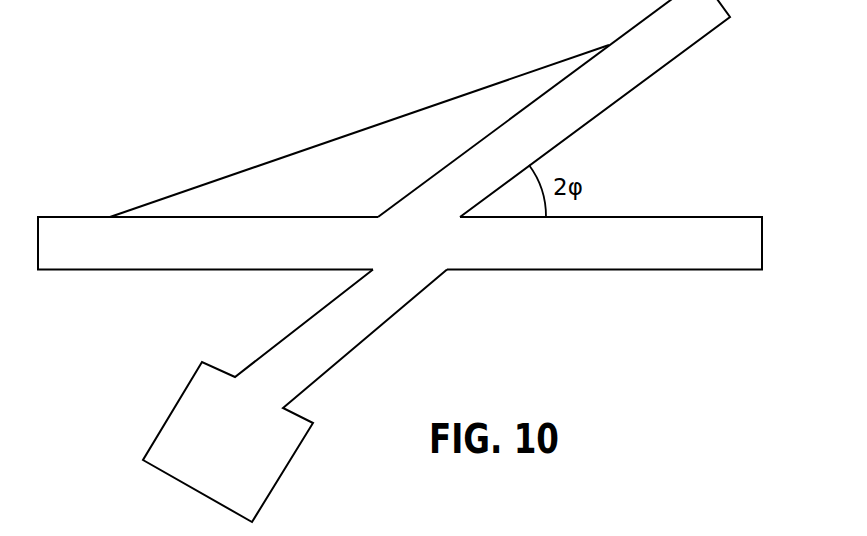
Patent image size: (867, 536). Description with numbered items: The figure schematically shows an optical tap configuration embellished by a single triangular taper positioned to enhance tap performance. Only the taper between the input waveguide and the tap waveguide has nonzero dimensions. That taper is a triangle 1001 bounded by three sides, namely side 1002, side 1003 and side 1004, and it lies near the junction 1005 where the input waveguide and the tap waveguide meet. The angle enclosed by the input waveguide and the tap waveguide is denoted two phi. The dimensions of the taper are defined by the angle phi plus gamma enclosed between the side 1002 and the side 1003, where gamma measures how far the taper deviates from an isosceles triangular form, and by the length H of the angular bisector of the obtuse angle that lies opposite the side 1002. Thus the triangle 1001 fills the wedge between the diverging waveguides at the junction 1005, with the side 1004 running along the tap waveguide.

The triangle 1001 is at (485, 108).
The side 1002 is at (337, 138).
The side 1003 is at (205, 217).
The side 1004 is at (573, 74).
The junction 1005 is at (418, 242).